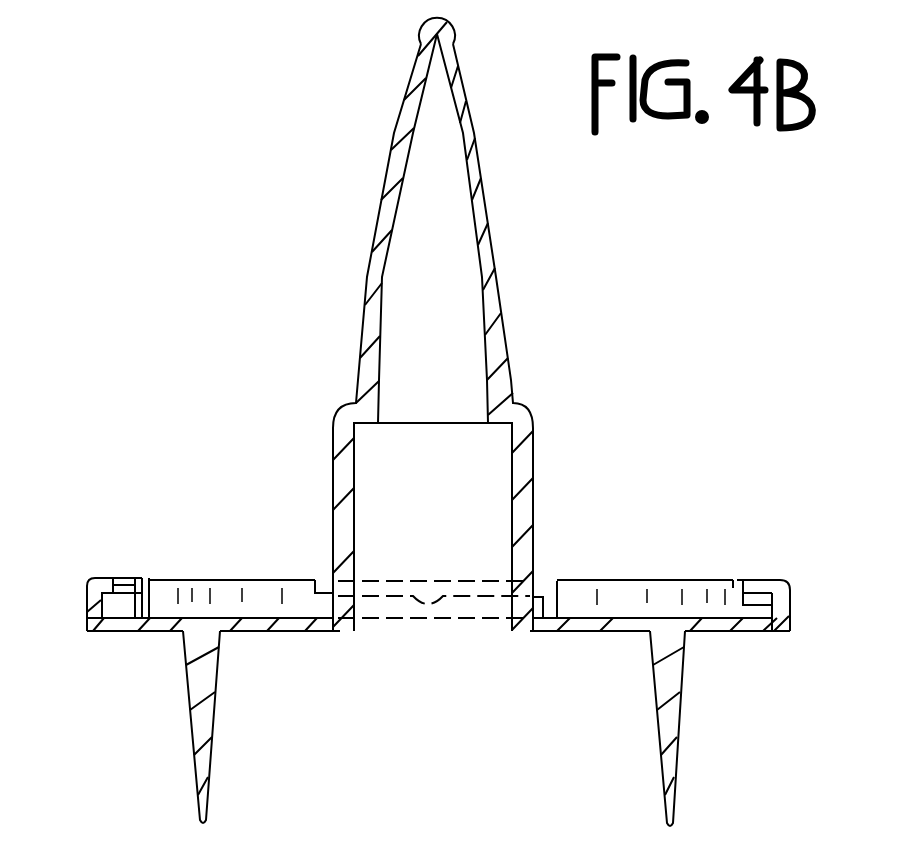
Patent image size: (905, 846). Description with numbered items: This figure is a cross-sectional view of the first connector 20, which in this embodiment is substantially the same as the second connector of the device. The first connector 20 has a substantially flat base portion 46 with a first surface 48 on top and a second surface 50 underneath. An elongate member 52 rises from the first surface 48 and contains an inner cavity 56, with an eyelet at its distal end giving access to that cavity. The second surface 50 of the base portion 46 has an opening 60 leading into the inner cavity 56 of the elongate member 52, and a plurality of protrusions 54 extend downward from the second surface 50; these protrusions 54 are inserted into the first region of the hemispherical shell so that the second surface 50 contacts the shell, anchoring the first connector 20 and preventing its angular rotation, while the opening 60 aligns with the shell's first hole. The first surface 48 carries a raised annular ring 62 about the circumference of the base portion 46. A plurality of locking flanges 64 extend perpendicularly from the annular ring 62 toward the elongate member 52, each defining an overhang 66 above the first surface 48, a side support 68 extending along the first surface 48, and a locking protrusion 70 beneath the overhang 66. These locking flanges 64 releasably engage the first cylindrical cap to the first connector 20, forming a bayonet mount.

The first connector 20 is at (157, 187).
The base portion 46 is at (772, 566).
The first surface 48 is at (230, 600).
The second surface 50 is at (608, 634).
The elongate member 52 is at (343, 333).
The protrusions 54 is at (674, 812).
The inner cavity 56 is at (452, 230).
The opening 60 is at (423, 633).
The raised annular ring 62 is at (87, 608).
The locking flanges 64 is at (74, 586).
The overhang 66 is at (143, 580).
The side support 68 is at (163, 600).
The locking protrusion 70 is at (114, 590).